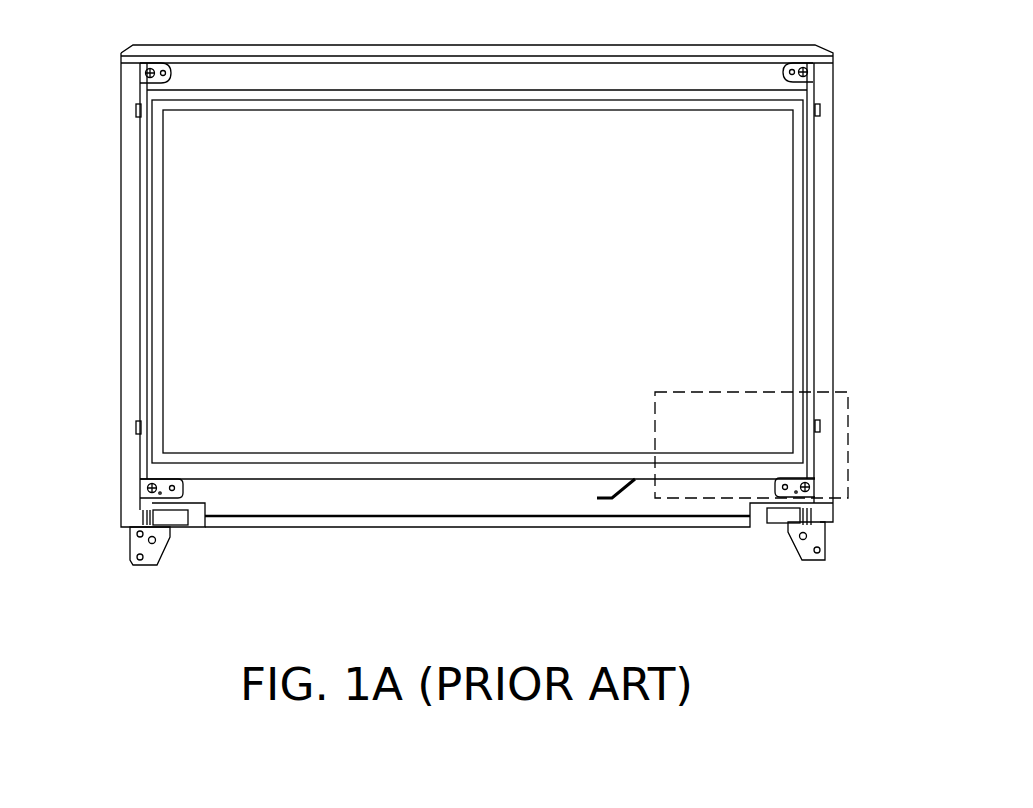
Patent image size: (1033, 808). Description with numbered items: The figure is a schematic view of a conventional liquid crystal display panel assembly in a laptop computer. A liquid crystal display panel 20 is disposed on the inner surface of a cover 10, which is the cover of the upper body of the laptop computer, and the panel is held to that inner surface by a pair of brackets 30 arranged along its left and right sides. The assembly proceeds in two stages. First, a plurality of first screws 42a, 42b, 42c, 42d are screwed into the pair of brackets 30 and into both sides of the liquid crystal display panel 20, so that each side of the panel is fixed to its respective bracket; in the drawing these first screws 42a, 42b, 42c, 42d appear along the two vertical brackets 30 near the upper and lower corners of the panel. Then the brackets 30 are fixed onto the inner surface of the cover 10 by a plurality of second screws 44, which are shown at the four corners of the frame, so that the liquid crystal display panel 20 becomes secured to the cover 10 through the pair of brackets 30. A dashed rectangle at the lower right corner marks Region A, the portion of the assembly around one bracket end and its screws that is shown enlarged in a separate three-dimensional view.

The cover 10 is at (826, 215).
The liquid crystal display panel 20 is at (770, 258).
The bracket 30 is at (140, 170).
The first screw 42a is at (820, 110).
The first screw 42b is at (820, 428).
The first screw 42c is at (137, 110).
The first screw 42d is at (137, 428).
The second screw 44 is at (143, 70).
The Region A is at (850, 392).